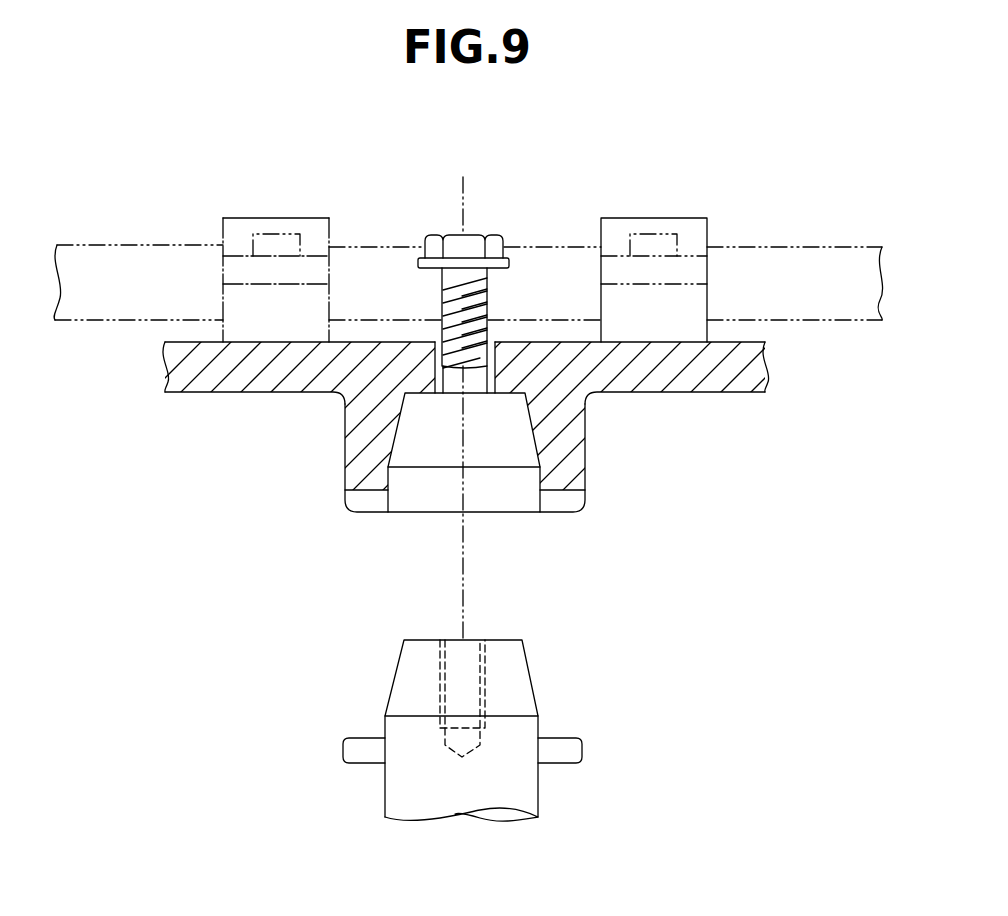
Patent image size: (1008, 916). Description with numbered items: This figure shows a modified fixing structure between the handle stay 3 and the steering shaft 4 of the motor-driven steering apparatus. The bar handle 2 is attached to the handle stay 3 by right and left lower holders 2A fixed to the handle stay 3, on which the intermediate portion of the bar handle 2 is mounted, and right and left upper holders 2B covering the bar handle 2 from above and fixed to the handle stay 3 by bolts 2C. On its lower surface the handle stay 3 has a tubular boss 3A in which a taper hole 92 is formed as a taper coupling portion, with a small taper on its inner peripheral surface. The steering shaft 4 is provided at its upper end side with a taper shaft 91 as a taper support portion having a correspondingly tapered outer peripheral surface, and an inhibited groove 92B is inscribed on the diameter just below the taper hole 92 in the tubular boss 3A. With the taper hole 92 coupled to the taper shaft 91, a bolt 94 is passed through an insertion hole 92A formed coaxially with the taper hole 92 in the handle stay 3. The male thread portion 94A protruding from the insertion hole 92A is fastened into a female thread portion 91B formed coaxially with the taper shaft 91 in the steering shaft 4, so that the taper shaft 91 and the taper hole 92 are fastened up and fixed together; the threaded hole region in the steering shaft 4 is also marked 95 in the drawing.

The bar handle 2 is at (840, 247).
The lower holder 2A is at (222, 300).
The upper holder 2B is at (240, 256).
The bolt 2C is at (278, 233).
The handle stay 3 is at (738, 367).
The lower surface tubular boss 3A is at (588, 443).
The steering shaft 4 is at (522, 793).
The taper shaft 91 is at (395, 680).
The female thread portion 91B is at (353, 750).
The taper hole 92 is at (405, 431).
The insertion hole 92A is at (482, 378).
The inhibited groove 92B is at (363, 502).
The bolt 94 is at (495, 242).
The male thread portion 94A is at (488, 303).
The threaded hole 95 is at (482, 650).